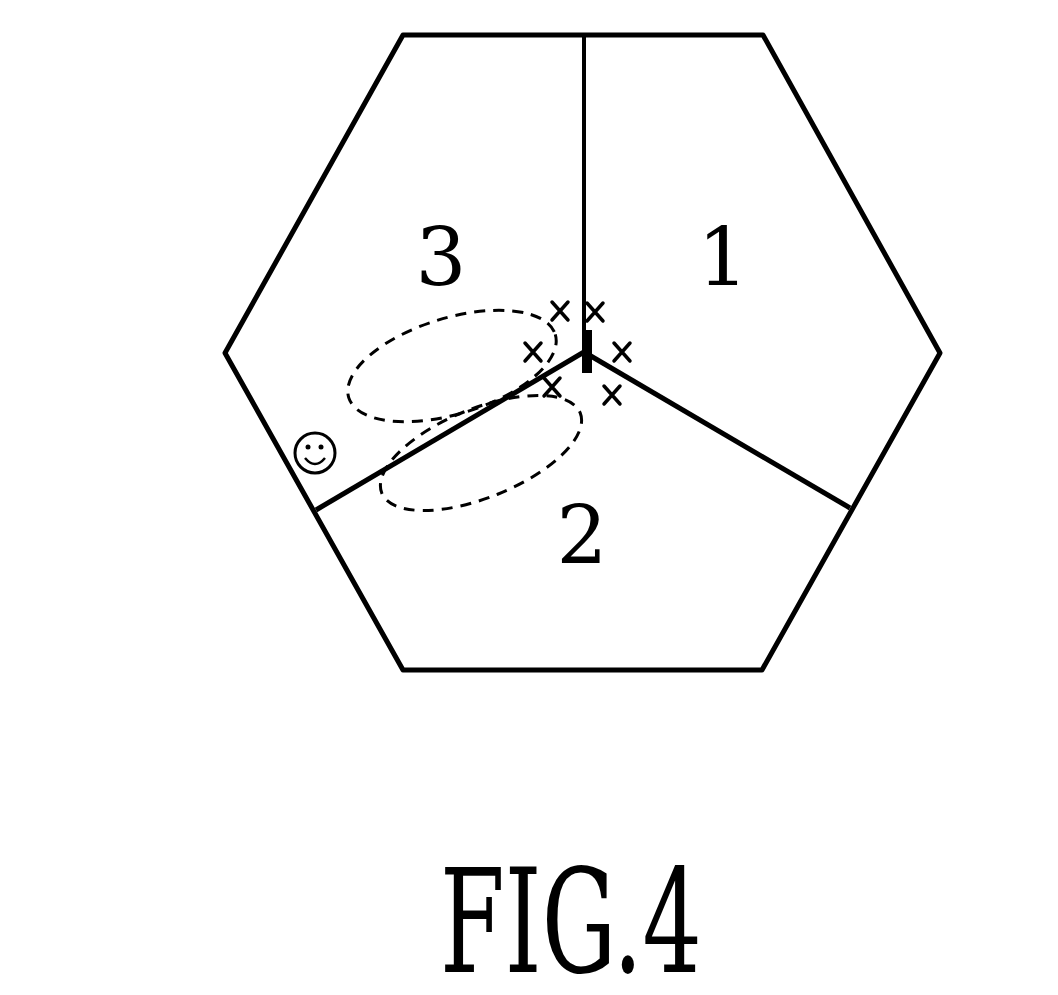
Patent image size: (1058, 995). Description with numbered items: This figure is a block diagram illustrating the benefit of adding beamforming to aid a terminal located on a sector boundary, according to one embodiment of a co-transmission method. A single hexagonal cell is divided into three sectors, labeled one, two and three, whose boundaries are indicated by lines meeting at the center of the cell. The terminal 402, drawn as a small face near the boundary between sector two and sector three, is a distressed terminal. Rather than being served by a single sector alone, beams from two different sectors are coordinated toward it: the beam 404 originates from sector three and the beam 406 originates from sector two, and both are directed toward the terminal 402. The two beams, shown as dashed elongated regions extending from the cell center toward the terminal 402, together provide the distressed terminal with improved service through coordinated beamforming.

The terminal 402 is at (299, 440).
The beam 404 is at (353, 360).
The beam 406 is at (403, 507).